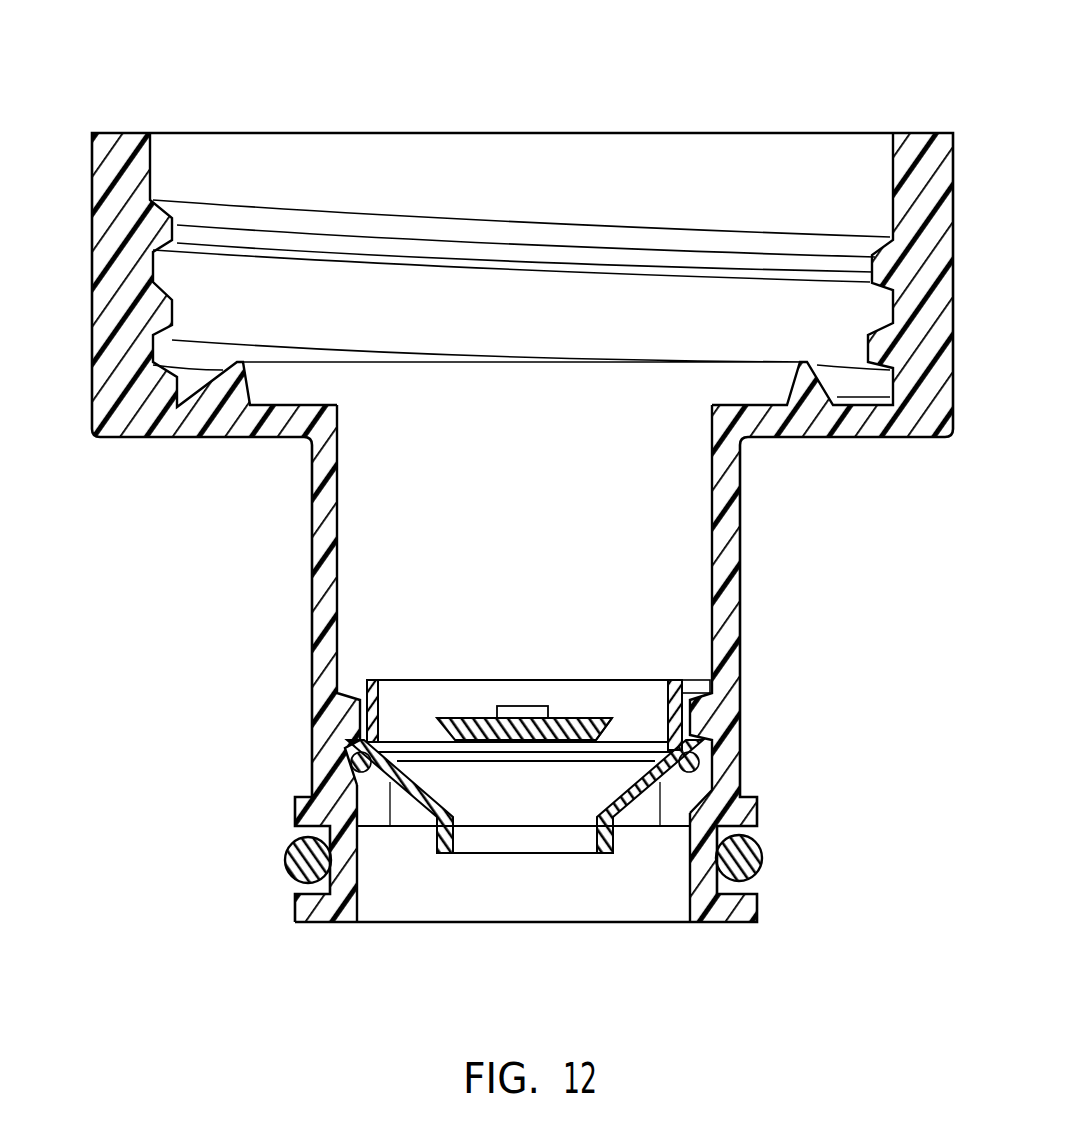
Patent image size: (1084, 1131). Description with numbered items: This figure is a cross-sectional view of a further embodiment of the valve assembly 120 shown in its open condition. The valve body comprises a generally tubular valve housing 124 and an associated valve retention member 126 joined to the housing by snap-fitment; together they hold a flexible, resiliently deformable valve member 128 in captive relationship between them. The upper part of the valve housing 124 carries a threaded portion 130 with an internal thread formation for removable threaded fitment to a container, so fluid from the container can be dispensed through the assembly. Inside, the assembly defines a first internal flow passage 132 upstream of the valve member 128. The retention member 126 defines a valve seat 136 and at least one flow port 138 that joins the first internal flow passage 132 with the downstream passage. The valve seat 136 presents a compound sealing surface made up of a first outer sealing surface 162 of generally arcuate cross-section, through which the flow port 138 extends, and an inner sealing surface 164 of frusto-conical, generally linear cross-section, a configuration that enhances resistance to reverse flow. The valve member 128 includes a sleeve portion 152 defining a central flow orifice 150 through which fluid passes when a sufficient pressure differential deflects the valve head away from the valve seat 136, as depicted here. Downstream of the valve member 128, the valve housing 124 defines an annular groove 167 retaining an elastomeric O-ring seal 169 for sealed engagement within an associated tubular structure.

The valve assembly 120 is at (840, 58).
The threaded portion 130 is at (98, 188).
The first internal flow passage 132 is at (358, 578).
The valve housing 124 is at (752, 545).
The valve retention member 126 is at (522, 668).
The valve seat 136 is at (465, 718).
The flow port 138 is at (612, 722).
The first outer sealing surface 162 is at (522, 758).
The inner sealing surface 164 is at (600, 758).
The valve member 128 is at (641, 810).
The central flow orifice 150 is at (455, 841).
The sleeve portion 152 is at (437, 858).
The annular groove 167 is at (330, 890).
The O-ring seal 169 is at (291, 848).